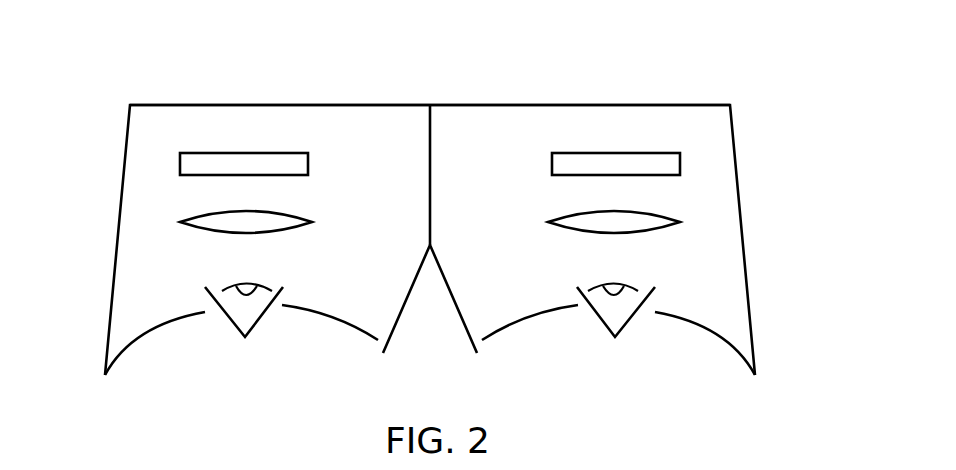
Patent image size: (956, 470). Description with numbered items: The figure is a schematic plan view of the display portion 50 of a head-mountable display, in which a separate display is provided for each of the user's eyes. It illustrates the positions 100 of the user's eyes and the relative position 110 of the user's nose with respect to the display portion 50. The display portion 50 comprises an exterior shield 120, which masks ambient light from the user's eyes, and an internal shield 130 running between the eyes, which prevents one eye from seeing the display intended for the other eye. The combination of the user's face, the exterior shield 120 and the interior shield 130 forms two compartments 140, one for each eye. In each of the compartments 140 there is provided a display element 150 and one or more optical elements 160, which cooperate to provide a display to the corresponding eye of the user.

The display portion 50 is at (715, 102).
The positions of the user's eyes 100 is at (247, 330).
The relative position of the user's nose 110 is at (453, 297).
The exterior shield 120 is at (508, 103).
The internal shield 130 is at (432, 177).
The compartments 140 is at (293, 125).
The display element 150 is at (200, 163).
The optical elements 160 is at (178, 222).